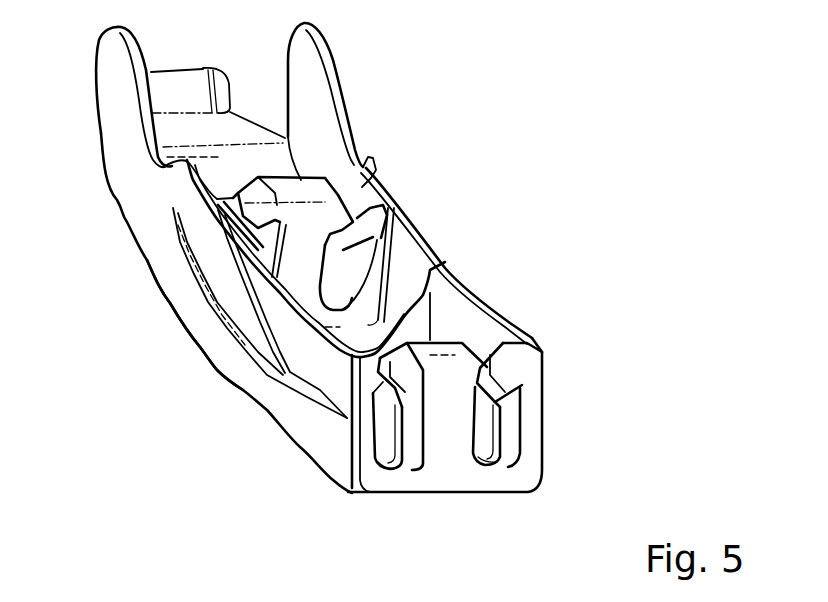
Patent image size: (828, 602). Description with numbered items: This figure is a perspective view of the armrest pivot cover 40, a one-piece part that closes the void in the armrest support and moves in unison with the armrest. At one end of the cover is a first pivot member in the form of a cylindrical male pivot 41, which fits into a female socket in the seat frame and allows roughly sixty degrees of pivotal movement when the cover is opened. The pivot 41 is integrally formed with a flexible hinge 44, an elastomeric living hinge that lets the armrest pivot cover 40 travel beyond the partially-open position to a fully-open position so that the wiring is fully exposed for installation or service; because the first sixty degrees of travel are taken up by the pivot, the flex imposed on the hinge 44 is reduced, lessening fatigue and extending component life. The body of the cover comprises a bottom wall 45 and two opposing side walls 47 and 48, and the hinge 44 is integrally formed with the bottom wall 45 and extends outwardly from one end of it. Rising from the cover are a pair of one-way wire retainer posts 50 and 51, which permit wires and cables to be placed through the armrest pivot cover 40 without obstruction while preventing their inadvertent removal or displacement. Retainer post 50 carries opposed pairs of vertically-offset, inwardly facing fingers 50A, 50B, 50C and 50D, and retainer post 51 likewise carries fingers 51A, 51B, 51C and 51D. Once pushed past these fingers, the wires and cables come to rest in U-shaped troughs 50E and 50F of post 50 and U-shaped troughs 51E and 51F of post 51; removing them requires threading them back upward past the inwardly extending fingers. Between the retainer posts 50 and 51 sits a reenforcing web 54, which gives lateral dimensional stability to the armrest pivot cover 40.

The armrest pivot cover 40 is at (527, 178).
The cylindrical male pivot 41 is at (183, 88).
The flexible hinge 44 is at (180, 130).
The bottom wall 45 is at (153, 158).
The side wall 47 is at (500, 302).
The side wall 48 is at (215, 348).
The one-way wire retainer post 50 is at (303, 187).
The inwardly facing finger 50A is at (408, 205).
The inwardly facing finger 50B is at (357, 160).
The inwardly facing finger 50C is at (260, 267).
The inwardly facing finger 50D is at (258, 192).
The U-shaped trough 50E is at (430, 255).
The U-shaped trough 50F is at (222, 310).
The one-way wire retainer post 51 is at (450, 432).
The inwardly facing finger 51A is at (500, 385).
The inwardly facing finger 51B is at (505, 368).
The inwardly facing finger 51C is at (407, 406).
The inwardly facing finger 51D is at (377, 360).
The U-shaped trough 51E is at (503, 457).
The U-shaped trough 51F is at (403, 460).
The reenforcing web 54 is at (355, 270).